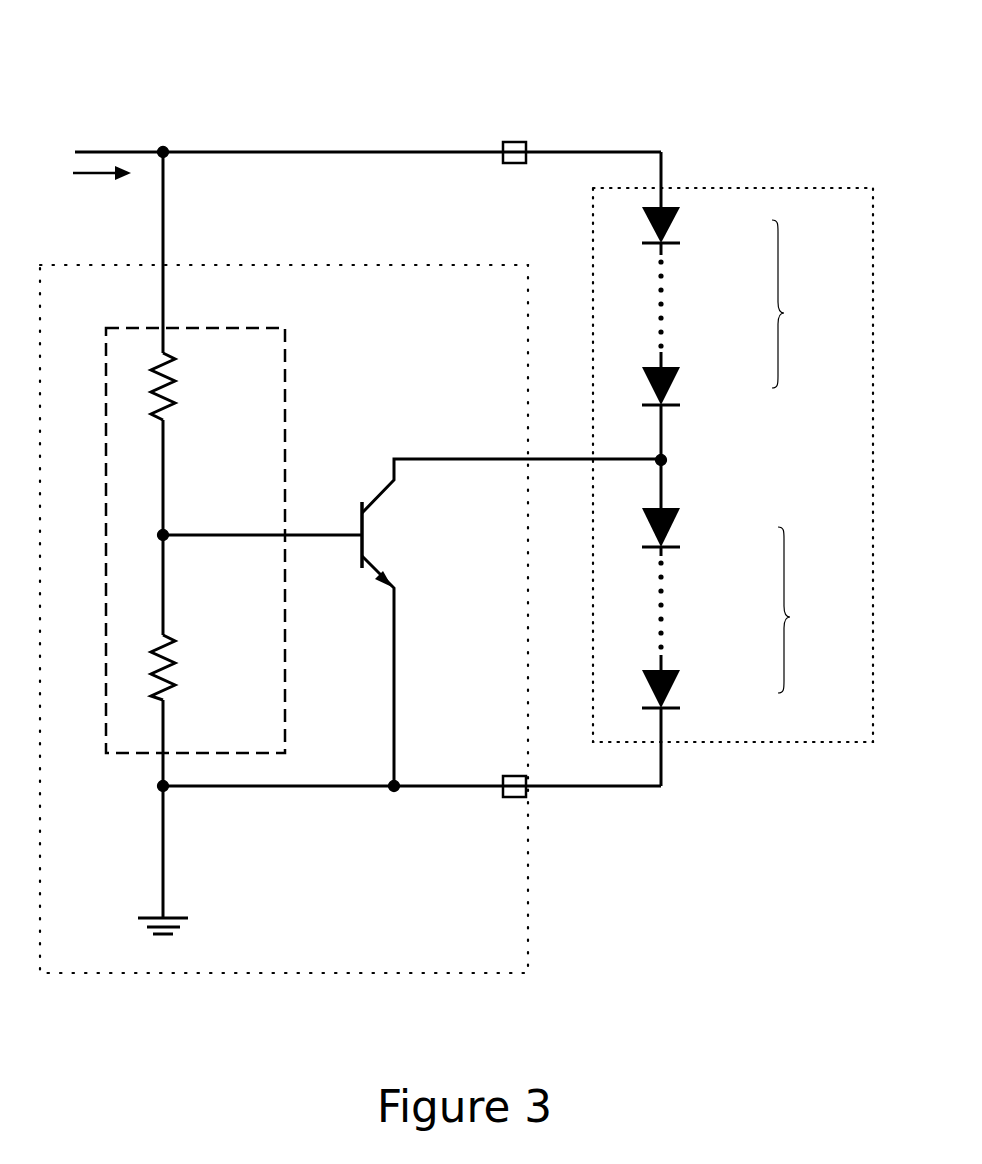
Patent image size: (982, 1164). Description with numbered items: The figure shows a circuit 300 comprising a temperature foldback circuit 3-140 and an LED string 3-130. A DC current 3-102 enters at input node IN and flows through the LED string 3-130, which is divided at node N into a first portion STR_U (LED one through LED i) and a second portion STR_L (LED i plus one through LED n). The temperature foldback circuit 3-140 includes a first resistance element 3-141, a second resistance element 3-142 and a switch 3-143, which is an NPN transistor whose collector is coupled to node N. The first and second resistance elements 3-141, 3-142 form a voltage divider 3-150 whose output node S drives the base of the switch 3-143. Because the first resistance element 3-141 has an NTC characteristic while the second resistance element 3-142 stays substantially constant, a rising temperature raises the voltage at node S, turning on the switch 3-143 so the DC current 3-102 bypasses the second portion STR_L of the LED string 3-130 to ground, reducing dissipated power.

The LED driver circuit 300 is at (182, 42).
The DC current 3-102 is at (87, 187).
The LED string 3-130 is at (703, 187).
The temperature foldback circuit 3-140 is at (460, 897).
The first resistance element 3-141 is at (176, 383).
The second resistance element 3-142 is at (176, 661).
The switch 3-143 is at (362, 541).
The voltage divider 3-150 is at (285, 390).